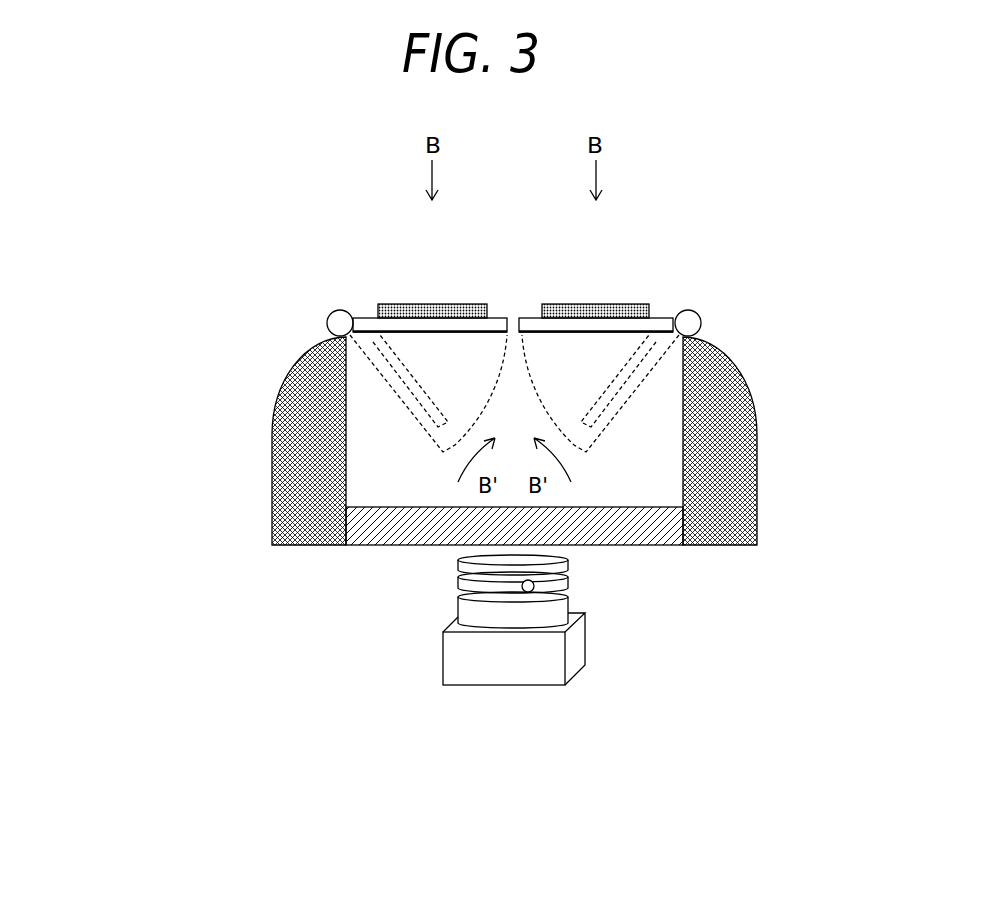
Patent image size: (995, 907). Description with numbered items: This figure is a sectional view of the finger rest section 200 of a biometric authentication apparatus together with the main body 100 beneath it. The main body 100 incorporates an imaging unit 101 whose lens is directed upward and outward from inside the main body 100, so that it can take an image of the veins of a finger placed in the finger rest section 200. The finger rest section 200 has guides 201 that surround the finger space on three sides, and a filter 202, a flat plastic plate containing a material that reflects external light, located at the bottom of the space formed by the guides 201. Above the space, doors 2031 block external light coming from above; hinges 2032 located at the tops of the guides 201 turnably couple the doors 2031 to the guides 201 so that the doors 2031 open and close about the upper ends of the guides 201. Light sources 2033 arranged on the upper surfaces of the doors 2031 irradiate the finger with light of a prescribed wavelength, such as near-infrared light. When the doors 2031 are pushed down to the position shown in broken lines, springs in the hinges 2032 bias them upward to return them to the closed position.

The main body 100 is at (117, 547).
The imaging unit 101 is at (510, 685).
The finger rest section 200 is at (787, 205).
The guides 201 is at (277, 407).
The filter 202 is at (647, 530).
The doors 2031 is at (350, 313).
The hinges 2032 is at (327, 323).
The light sources 2033 is at (433, 305).